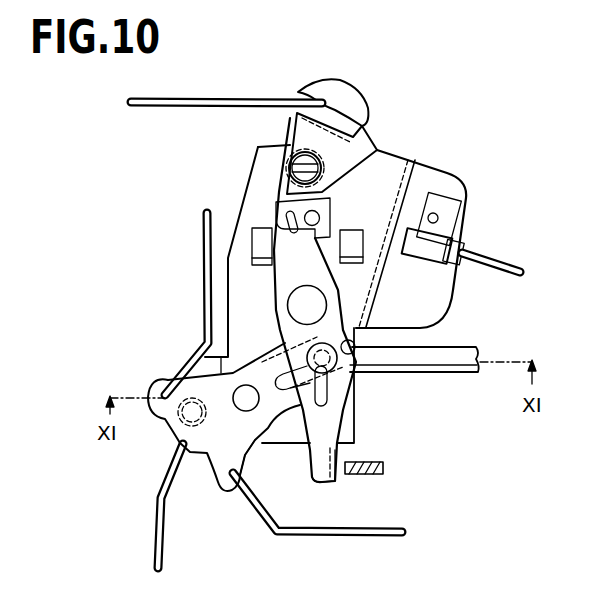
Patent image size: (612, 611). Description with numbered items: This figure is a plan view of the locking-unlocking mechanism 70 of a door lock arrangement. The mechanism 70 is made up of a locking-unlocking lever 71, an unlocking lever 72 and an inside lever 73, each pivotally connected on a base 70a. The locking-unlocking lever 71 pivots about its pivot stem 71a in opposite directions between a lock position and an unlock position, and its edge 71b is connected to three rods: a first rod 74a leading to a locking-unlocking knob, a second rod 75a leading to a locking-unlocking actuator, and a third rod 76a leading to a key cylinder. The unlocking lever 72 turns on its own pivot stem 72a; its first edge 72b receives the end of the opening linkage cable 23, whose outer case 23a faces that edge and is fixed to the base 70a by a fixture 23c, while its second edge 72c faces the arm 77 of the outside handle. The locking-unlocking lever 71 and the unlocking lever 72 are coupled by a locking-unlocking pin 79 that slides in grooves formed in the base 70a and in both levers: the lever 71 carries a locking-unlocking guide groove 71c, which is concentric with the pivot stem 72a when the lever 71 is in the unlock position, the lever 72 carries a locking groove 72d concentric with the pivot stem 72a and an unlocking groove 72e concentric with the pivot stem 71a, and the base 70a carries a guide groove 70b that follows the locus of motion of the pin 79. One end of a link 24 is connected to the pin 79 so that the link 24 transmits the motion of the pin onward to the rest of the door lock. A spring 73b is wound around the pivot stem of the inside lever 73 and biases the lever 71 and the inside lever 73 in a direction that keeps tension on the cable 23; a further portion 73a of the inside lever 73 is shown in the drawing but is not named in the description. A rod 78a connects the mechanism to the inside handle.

The locking-unlocking mechanism 70 is at (490, 98).
The base 70a is at (421, 160).
The guide groove 70b is at (300, 404).
The inside lever 73 is at (339, 86).
The lever tab 73a is at (285, 222).
The spring 73b is at (288, 154).
The unlocking lever 72 is at (275, 293).
The pivot stem 72a is at (304, 292).
The first edge 72b is at (322, 194).
The second edge 72c is at (326, 484).
The locking groove 72d is at (356, 352).
The unlocking groove 72e is at (330, 398).
The locking-unlocking pin 79 is at (312, 350).
The opening linkage cable 23 is at (398, 245).
The outer case 23a is at (501, 266).
The fixture 23c is at (445, 242).
The link 24 is at (457, 377).
The rod 78a is at (173, 108).
The first rod 74a is at (203, 283).
The second rod 75a is at (156, 520).
The third rod 76a is at (340, 537).
The locking-unlocking lever 71 is at (218, 493).
The pivot stem 71a is at (242, 406).
The edge 71b is at (247, 462).
The locking-unlocking guide groove 71c is at (283, 377).
The arm 77 is at (365, 476).